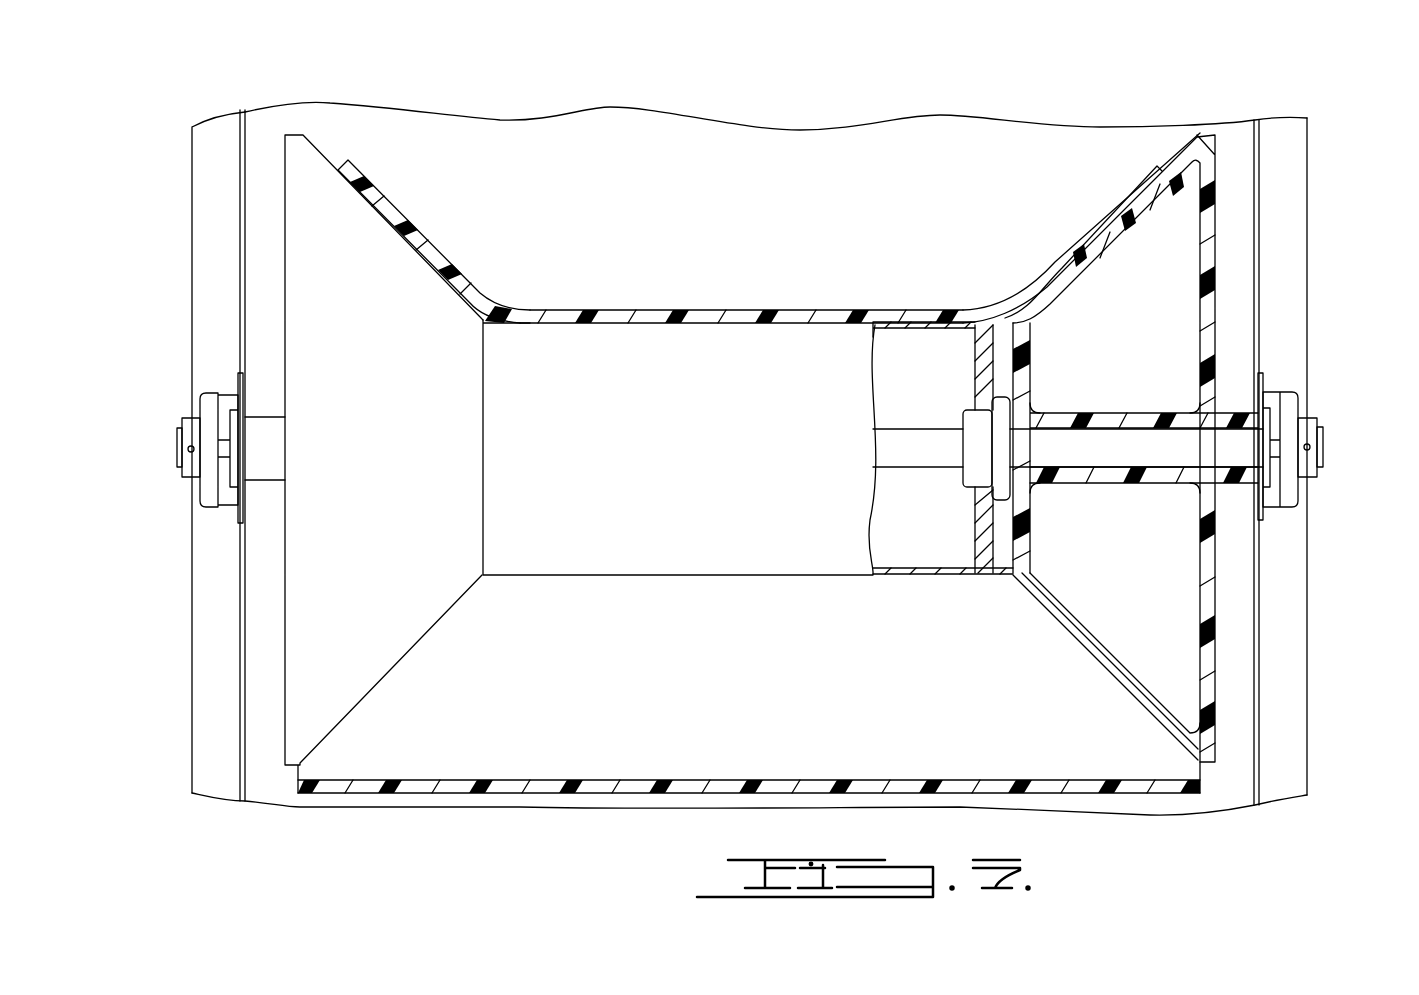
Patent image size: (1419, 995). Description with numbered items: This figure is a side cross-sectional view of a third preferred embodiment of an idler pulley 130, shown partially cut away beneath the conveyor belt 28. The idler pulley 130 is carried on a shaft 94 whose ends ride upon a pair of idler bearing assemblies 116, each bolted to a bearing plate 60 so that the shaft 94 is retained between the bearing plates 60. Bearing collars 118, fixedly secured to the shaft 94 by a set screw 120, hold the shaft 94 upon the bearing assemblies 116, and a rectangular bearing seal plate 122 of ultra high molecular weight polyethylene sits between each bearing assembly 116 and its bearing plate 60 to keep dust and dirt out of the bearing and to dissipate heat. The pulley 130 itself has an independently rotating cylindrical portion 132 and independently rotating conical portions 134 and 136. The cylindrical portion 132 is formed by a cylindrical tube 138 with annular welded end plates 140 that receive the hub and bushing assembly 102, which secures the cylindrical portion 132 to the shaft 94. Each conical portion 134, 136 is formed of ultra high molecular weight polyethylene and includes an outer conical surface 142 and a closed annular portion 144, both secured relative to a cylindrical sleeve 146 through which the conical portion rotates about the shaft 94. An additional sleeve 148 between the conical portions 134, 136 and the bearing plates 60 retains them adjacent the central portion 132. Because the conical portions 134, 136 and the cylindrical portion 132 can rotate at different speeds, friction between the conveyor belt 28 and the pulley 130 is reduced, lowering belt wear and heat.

The idler pulley 130 is at (751, 102).
The bearing plate 60 is at (243, 185).
The conveyor belt 28 is at (565, 320).
The outer conical surface 142 is at (415, 262).
The closed annular portion 144 is at (1218, 215).
The cylindrical sleeve 146 is at (1112, 422).
The additional sleeve 148 is at (1232, 477).
The annular welded end plate 140 is at (975, 355).
The cylindrical tube 138 is at (900, 573).
The hub and bushing assembly 102 is at (963, 414).
The shaft 94 is at (275, 470).
The cylindrical portion 132 is at (608, 555).
The conical portion 134 is at (403, 637).
The conical portion 136 is at (1070, 628).
The idler bearing assembly 116 is at (205, 507).
The bearing collar 118 is at (192, 428).
The set screw 120 is at (188, 449).
The bearing seal plate 122 is at (237, 523).